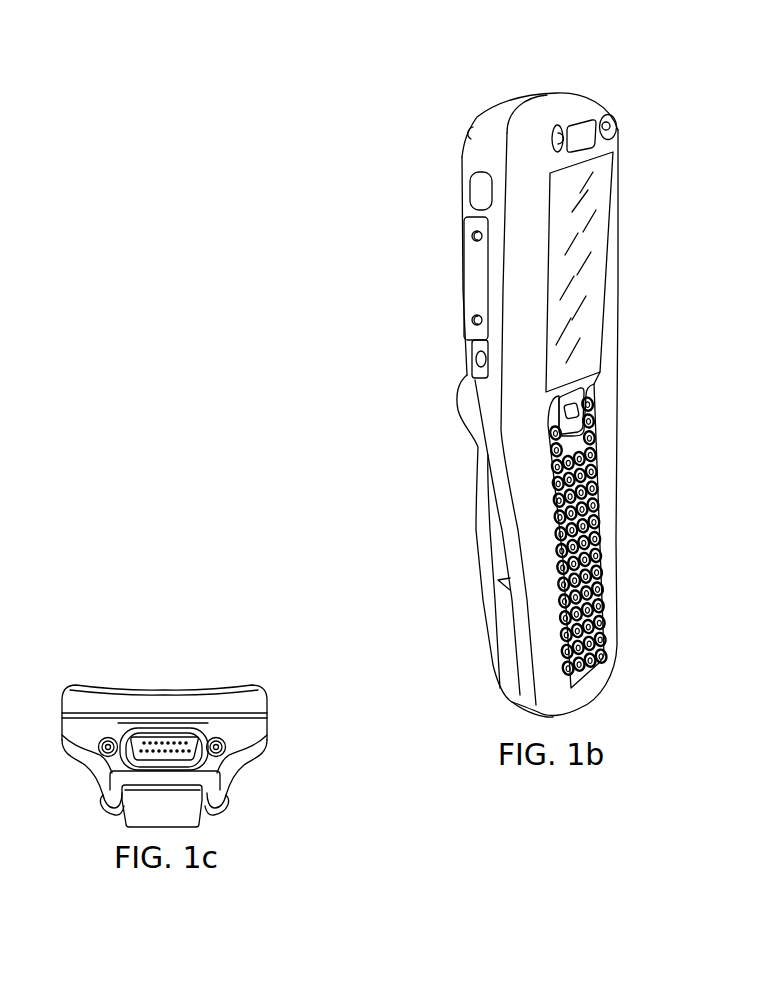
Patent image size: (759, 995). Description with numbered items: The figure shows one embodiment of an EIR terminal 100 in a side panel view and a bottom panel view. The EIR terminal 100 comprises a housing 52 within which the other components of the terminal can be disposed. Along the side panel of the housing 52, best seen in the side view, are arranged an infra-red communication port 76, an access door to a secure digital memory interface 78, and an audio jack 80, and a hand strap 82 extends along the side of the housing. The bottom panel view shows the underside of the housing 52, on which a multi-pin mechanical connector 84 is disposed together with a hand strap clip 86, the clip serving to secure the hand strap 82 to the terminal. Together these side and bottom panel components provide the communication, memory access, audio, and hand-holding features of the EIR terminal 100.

In FIG. 1b, the EIR terminal 100 is at (598, 87).
In FIG. 1b, the housing 52 is at (500, 120).
In FIG. 1b, the infra-red communication port 76 is at (480, 185).
In FIG. 1b, the access door to a secure digital (SD) memory interface 78 is at (478, 270).
In FIG. 1b, the audio jack 80 is at (472, 355).
In FIG. 1b, the hand strap 82 is at (480, 461).
In FIG. 1c, the multi-pin mechanical connector 84 is at (118, 723).
In FIG. 1c, the hand strap clip 86 is at (205, 778).